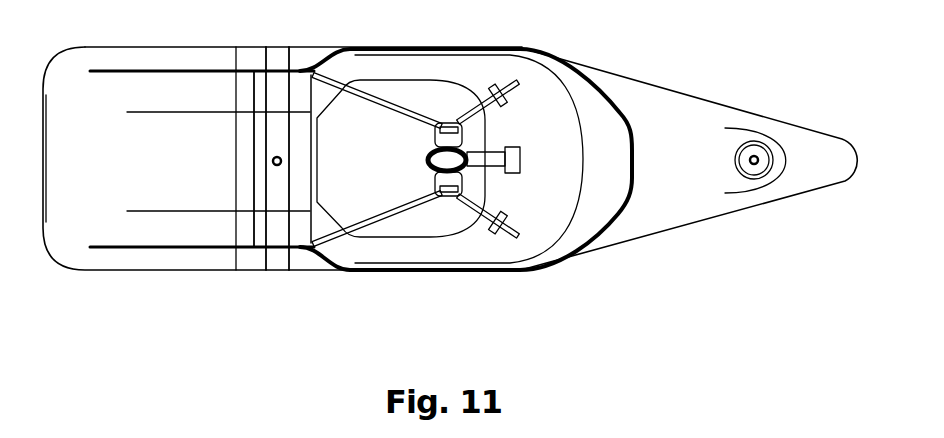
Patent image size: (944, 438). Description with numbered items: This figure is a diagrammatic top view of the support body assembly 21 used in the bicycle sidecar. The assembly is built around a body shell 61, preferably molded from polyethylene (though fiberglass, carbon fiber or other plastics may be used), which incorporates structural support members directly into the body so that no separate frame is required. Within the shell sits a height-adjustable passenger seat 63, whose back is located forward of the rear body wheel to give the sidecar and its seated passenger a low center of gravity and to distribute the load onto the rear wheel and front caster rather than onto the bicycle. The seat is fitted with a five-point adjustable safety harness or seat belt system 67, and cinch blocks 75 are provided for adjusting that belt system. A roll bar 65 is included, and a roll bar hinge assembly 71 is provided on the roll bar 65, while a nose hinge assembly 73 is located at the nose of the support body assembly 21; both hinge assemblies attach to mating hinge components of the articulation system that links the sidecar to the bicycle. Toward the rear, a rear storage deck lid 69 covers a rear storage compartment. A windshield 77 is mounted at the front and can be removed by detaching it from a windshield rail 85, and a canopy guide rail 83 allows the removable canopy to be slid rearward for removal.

The support body assembly 21 is at (447, 342).
The body shell 61 is at (650, 237).
The height-adjustable passenger seat 63 is at (396, 228).
The roll bar 65 is at (263, 257).
The five-point adjustable safety harness or seat belt system 67 is at (382, 108).
The rear storage deck lid 69 is at (149, 203).
The roll bar hinge assembly 71 is at (269, 161).
The nose hinge assembly 73 is at (743, 179).
The cinch blocks 75 is at (432, 143).
The windshield 77 is at (598, 118).
The canopy guide rail 83 is at (178, 73).
The windshield rail 85 is at (604, 213).